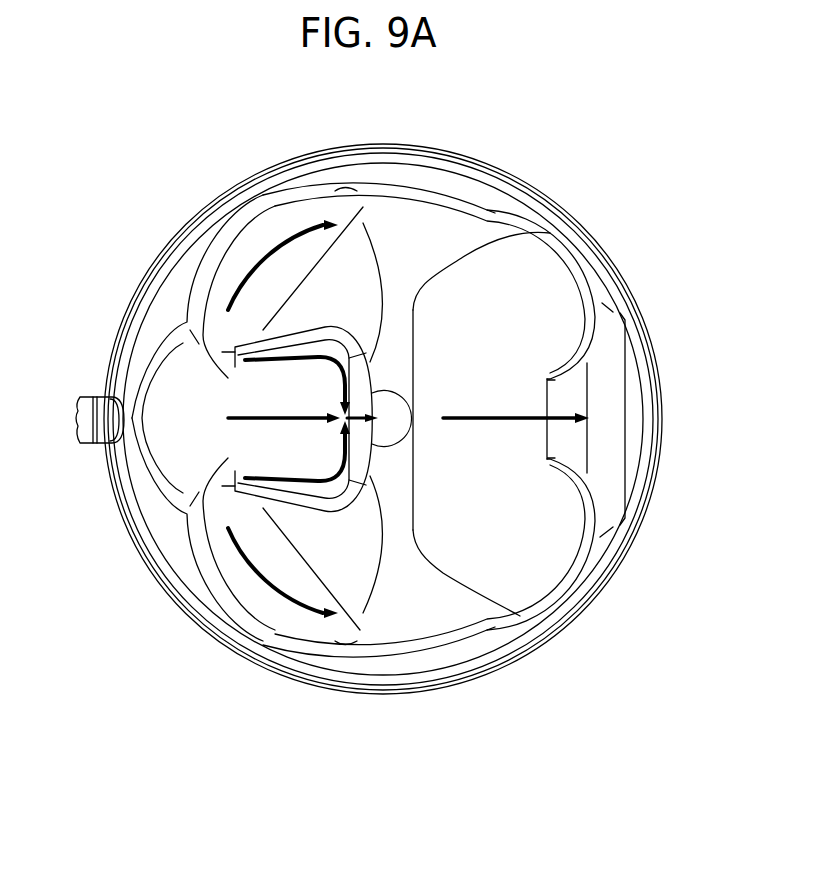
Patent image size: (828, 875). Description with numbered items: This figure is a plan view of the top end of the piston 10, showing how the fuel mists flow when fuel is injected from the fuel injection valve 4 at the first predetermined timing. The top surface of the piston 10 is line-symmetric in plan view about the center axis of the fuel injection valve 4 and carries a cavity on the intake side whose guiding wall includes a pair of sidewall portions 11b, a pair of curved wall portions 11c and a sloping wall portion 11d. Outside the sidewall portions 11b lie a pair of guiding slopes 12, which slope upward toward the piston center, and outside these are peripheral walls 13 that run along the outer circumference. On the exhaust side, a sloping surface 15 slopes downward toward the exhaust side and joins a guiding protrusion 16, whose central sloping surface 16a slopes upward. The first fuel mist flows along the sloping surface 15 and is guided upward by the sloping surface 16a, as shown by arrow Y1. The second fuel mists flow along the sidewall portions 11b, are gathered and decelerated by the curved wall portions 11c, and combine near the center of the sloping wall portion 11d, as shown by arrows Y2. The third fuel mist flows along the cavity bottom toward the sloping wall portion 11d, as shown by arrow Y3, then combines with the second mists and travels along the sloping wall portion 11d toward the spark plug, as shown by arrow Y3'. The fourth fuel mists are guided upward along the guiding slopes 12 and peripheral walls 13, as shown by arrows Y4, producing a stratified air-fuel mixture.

The fuel injection valve 4 is at (87, 397).
The piston 10 is at (424, 141).
The sidewall portions 11b is at (275, 336).
The curved wall portions 11c is at (343, 345).
The sloping wall portion 11d is at (390, 360).
The guiding slopes 12 is at (243, 243).
The peripheral walls 13 is at (268, 200).
The sloping surface 15 is at (513, 263).
The guiding protrusion 16 is at (605, 393).
The sloping surface (guiding surface) 16a is at (568, 452).
The arrow Y1 is at (483, 417).
The arrows Y2 is at (276, 361).
The arrow Y3 is at (272, 431).
The arrow Y3' is at (413, 442).
The arrows Y4 is at (290, 246).